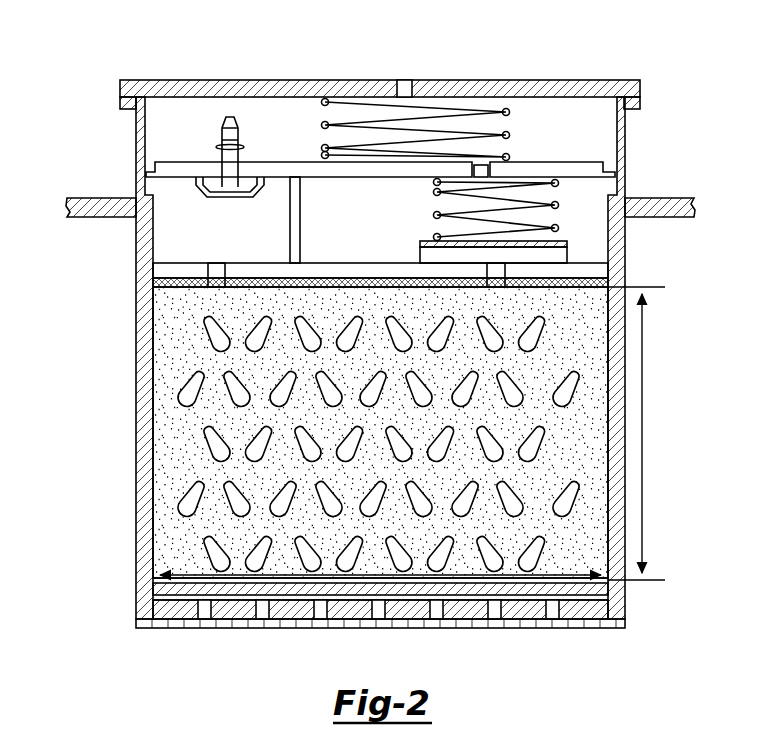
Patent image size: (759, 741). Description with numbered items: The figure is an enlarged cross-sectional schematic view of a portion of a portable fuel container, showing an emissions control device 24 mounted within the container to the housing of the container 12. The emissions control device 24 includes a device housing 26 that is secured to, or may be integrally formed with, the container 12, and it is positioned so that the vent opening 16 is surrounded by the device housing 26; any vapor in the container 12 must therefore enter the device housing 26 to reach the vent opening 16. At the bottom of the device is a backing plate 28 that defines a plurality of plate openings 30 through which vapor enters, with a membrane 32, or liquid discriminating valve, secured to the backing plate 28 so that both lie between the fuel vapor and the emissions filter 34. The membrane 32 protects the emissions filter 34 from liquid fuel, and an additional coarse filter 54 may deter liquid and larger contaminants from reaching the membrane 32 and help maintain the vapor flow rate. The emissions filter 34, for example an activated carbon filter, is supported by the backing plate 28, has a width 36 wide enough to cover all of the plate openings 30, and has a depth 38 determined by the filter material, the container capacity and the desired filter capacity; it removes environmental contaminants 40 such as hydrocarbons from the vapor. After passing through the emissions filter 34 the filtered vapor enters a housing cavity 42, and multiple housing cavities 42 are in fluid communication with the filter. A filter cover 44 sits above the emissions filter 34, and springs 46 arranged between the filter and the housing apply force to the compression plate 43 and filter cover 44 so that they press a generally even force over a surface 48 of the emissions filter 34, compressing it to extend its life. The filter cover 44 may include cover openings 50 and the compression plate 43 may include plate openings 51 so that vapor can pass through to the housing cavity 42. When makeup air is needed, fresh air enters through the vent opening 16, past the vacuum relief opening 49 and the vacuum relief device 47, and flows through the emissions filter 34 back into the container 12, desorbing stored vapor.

The container 12 is at (207, 88).
The vent opening 16 is at (402, 84).
The emissions control device 24 is at (98, 158).
The device housing 26 is at (143, 340).
The backing plate 28 is at (240, 612).
The plate openings 30 is at (553, 620).
The membrane 32 is at (292, 592).
The emissions filter 34 is at (590, 302).
The width 36 is at (160, 575).
The depth 38 is at (662, 432).
The environmental contaminants 40 is at (213, 440).
The housing cavity 42 is at (343, 212).
The compression plate 43 is at (365, 265).
The filter cover 44 is at (372, 290).
The spring 46 is at (357, 100).
The vacuum relief device 47 is at (222, 128).
The surface 48 is at (293, 284).
The vacuum relief opening 49 is at (248, 162).
The cover openings 50 is at (212, 290).
The plate openings 51 is at (217, 263).
The coarse filter 54 is at (587, 629).